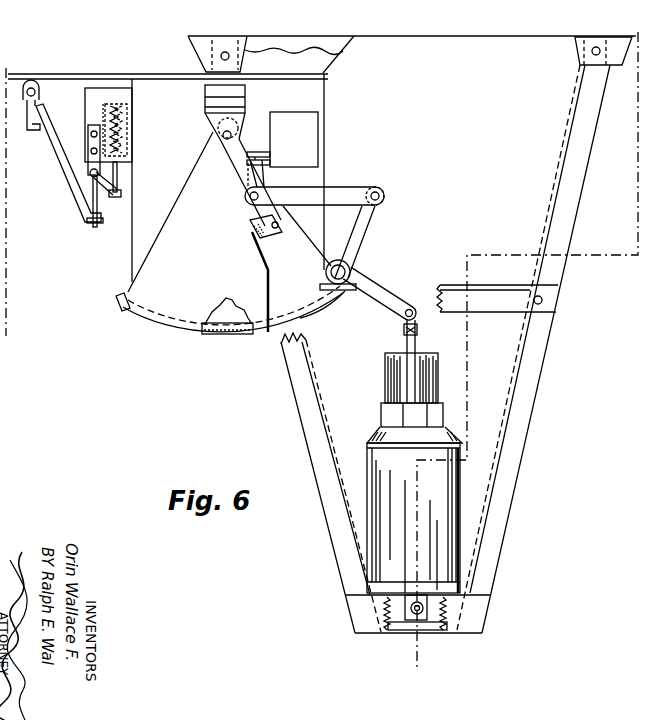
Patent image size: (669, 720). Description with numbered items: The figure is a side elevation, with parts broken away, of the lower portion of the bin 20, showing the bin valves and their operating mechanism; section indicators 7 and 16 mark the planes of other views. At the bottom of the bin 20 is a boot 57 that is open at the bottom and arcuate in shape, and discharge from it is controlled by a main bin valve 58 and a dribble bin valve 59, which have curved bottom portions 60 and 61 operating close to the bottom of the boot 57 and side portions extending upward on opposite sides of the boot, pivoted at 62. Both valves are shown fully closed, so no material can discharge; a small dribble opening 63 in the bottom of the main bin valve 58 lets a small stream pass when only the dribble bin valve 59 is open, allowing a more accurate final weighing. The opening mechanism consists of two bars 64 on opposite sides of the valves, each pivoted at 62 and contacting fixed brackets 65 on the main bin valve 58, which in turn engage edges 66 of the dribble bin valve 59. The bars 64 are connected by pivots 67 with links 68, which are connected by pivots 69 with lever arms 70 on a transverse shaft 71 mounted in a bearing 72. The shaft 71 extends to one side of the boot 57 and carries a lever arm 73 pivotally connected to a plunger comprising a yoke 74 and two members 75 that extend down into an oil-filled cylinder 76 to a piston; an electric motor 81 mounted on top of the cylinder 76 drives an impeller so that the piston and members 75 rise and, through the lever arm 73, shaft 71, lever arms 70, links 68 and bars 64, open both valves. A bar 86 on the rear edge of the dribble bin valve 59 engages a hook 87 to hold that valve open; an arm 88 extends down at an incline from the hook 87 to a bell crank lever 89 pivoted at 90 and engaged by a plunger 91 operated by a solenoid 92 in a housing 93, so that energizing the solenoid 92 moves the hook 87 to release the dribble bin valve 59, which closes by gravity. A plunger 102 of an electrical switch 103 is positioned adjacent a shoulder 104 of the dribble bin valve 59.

The section line 7- 7 is at (624, 32).
The section line 16- 16 is at (26, 68).
The bin 20 is at (326, 63).
The boot 57 is at (322, 90).
The main bin valve 58 is at (304, 241).
The dribble bin valve 59 is at (172, 220).
The arcuate bottom portion 60 is at (322, 308).
The arcuate bottom portion 61 is at (180, 333).
The pivot 62 is at (212, 131).
The dribble opening 63 is at (233, 328).
The bars 64 is at (238, 178).
The fixed brackets 65 is at (252, 236).
The edges 66 is at (270, 262).
The pivots 67 is at (266, 191).
The links 68 is at (345, 193).
The pivots 69 is at (379, 196).
The lever arms 70 is at (368, 233).
The transverse shaft 71 is at (351, 266).
The bearing 72 is at (352, 281).
The lever arm 73 is at (372, 304).
The yoke 74 is at (404, 333).
The members 75 is at (406, 346).
The cylinder 76 is at (380, 458).
The motor 81 is at (398, 384).
The bar 86 is at (116, 300).
The hook 87 is at (36, 130).
The arm 88 is at (68, 187).
The bell crank lever 89 is at (100, 217).
The pivot 90 is at (90, 172).
The plunger 91 is at (119, 173).
The solenoid 92 is at (128, 120).
The housing 93 is at (90, 101).
The plunger 102 is at (270, 157).
The electrical switch 103 is at (298, 113).
The shoulder 104 is at (253, 154).